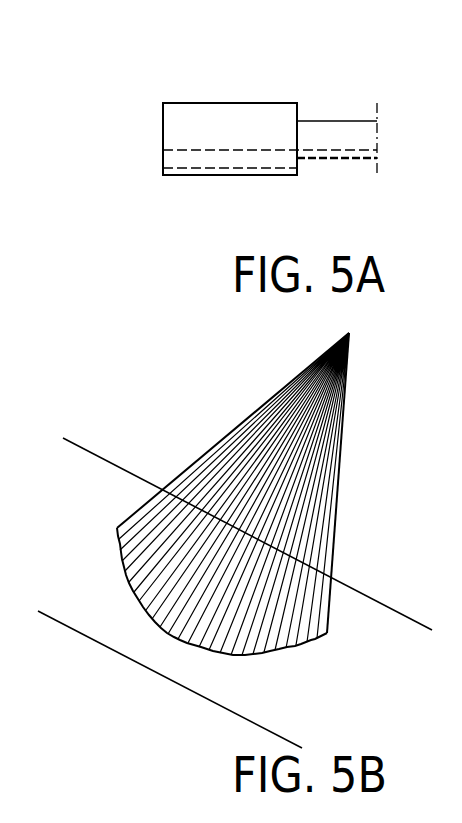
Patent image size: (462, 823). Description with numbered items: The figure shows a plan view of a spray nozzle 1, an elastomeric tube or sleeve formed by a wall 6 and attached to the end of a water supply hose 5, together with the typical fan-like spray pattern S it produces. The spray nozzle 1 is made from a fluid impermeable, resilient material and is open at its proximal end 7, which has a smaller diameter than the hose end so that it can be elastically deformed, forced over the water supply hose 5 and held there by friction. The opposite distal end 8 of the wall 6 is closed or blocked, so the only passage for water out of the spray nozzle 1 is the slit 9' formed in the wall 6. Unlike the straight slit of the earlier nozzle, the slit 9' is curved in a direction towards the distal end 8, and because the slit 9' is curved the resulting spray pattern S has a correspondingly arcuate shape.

In FIG. 5A, the spray nozzle 1 is at (115, 98).
In FIG. 5A, the water supply hose 5 is at (341, 121).
In FIG. 5A, the wall 6 is at (235, 175).
In FIG. 5A, the proximal end 7 is at (297, 167).
In FIG. 5A, the distal end 8 is at (163, 138).
In FIG. 5A, the slit 9' is at (270, 106).
In FIG. 5B, the spray pattern S is at (330, 462).